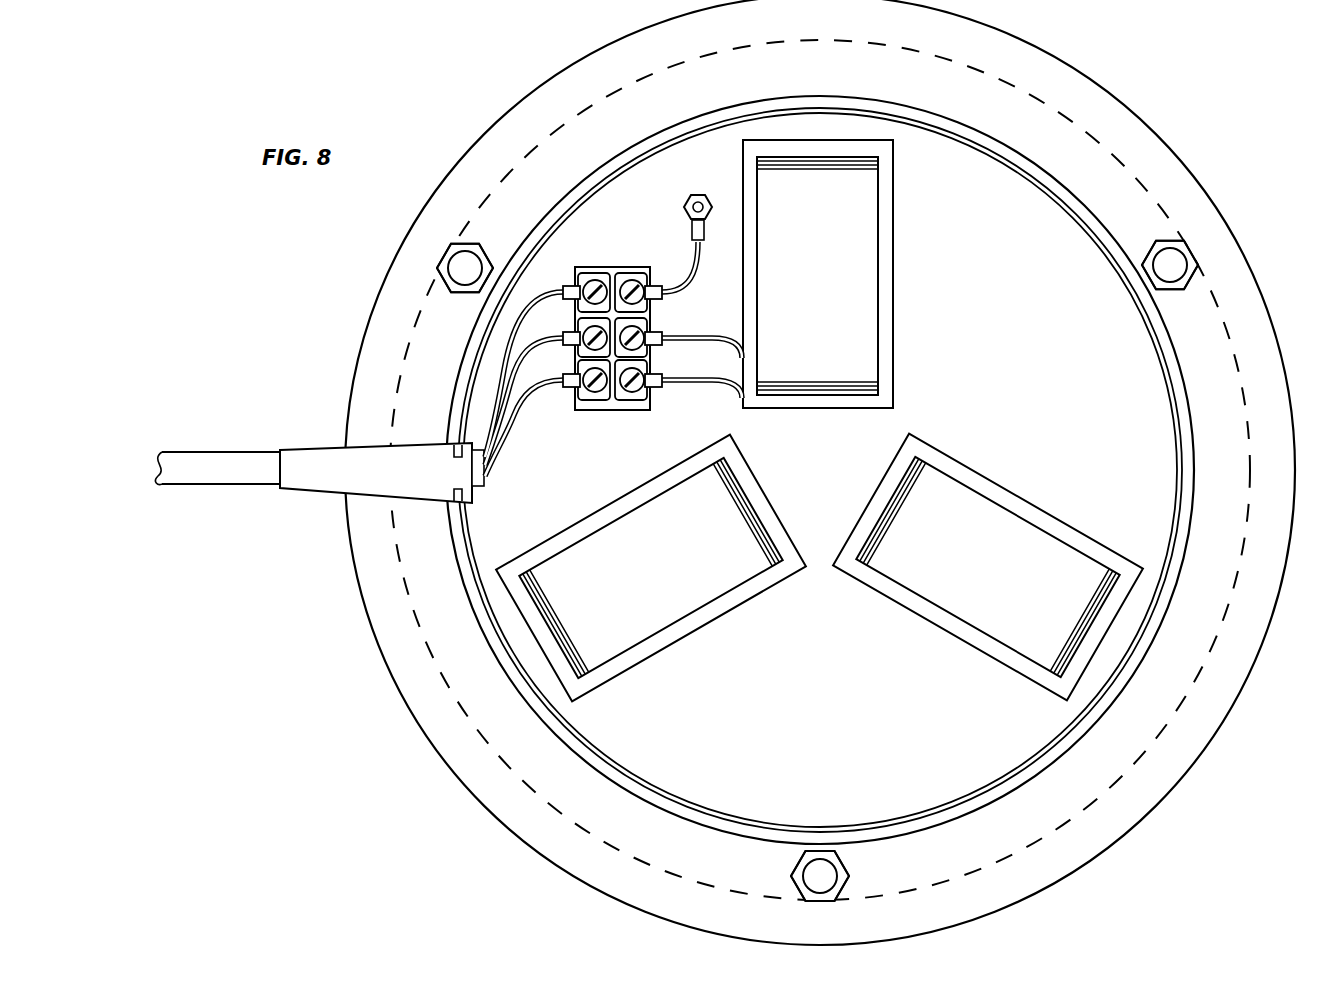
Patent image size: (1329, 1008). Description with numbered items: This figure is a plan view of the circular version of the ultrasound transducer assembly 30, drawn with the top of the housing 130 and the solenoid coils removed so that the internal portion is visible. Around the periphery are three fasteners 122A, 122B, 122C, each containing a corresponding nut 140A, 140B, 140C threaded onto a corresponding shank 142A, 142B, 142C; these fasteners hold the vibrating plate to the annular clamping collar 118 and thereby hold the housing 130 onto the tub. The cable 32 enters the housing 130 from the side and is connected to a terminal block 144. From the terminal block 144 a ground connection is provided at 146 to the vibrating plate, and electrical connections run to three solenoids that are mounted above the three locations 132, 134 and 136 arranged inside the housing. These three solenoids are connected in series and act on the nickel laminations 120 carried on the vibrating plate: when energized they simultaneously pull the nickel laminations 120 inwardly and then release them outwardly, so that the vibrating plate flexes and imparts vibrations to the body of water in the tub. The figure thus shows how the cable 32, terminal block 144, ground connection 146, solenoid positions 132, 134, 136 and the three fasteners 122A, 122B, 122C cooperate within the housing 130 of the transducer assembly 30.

The ultrasound transducer assembly 30 is at (358, 724).
The cable 32 is at (236, 463).
The annular clamping collar 118 is at (500, 119).
The nickel laminations 120 is at (757, 158).
The fastener 122A is at (409, 236).
The fastener 122B is at (1235, 255).
The fastener 122C is at (822, 886).
The housing 130 is at (843, 107).
The solenoid mounting location 132 is at (820, 274).
The solenoid mounting location 134 is at (684, 624).
The solenoid mounting location 136 is at (1013, 505).
The nut 140A is at (448, 262).
The nut 140B is at (1188, 259).
The nut 140C is at (838, 873).
The shank 142A is at (450, 281).
The shank 142B is at (1188, 279).
The shank 142C is at (838, 888).
The terminal block 144 is at (624, 266).
The ground connection 146 is at (684, 208).